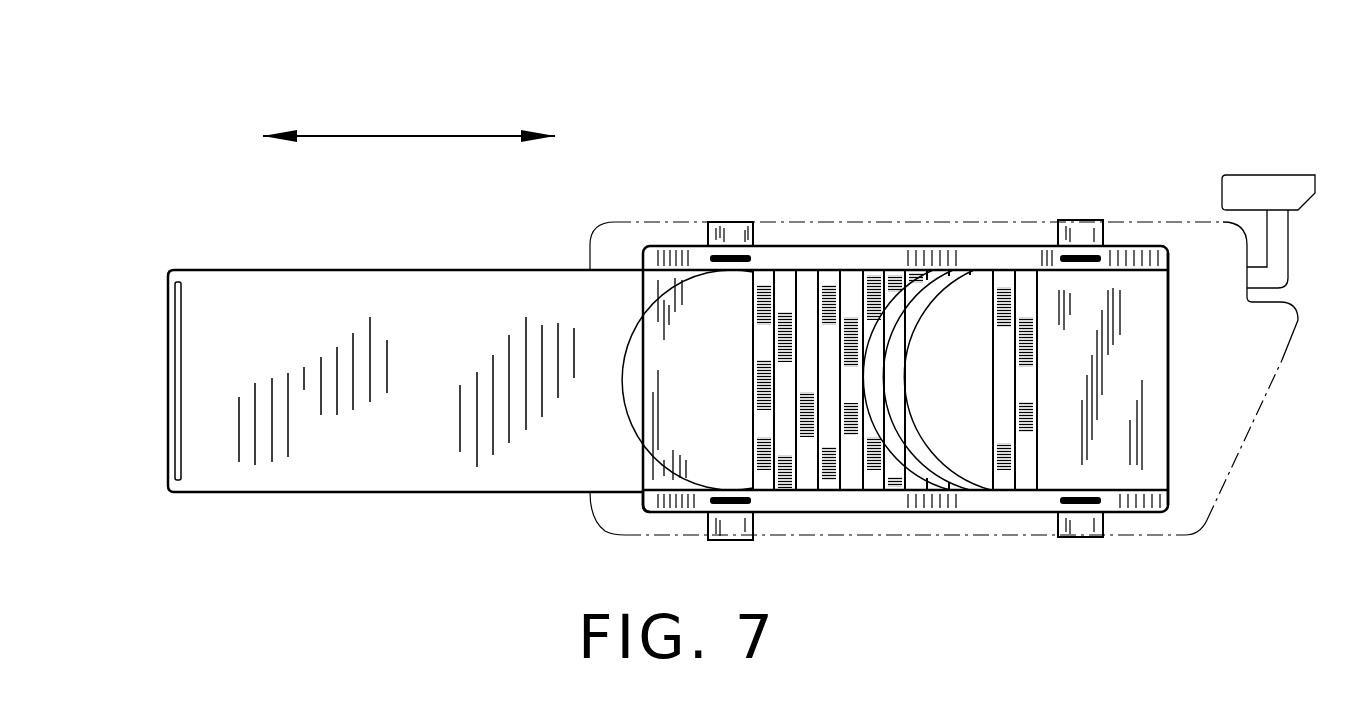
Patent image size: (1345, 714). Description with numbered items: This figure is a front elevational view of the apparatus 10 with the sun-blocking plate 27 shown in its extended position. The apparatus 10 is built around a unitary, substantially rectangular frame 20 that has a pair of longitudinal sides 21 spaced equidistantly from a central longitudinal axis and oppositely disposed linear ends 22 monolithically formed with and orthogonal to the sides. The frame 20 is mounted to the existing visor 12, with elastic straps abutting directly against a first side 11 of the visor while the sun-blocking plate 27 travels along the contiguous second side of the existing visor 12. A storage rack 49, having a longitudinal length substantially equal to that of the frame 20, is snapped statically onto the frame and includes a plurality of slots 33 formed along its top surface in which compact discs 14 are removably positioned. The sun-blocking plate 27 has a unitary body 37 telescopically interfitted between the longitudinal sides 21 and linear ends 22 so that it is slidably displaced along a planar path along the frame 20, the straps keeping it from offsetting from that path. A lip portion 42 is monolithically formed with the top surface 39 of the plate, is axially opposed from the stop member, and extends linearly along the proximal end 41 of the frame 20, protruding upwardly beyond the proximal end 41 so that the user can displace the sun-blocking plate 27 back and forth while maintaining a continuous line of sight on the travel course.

The apparatus 10 is at (662, 240).
The first side of the existing visor 11 is at (1198, 512).
The existing visor 12 is at (1228, 398).
The compact discs 14 is at (922, 470).
The frame 20 is at (1050, 505).
The longitudinal sides 21 is at (808, 247).
The linear ends 22 is at (1167, 512).
The sun-blocking plate 27 is at (312, 477).
The slots 33 is at (797, 490).
The unitary body 37 is at (388, 477).
The top surface 39 is at (495, 477).
The proximal end of the frame 41 is at (645, 505).
The lip portion 42 is at (176, 477).
The storage rack 49 is at (1013, 490).